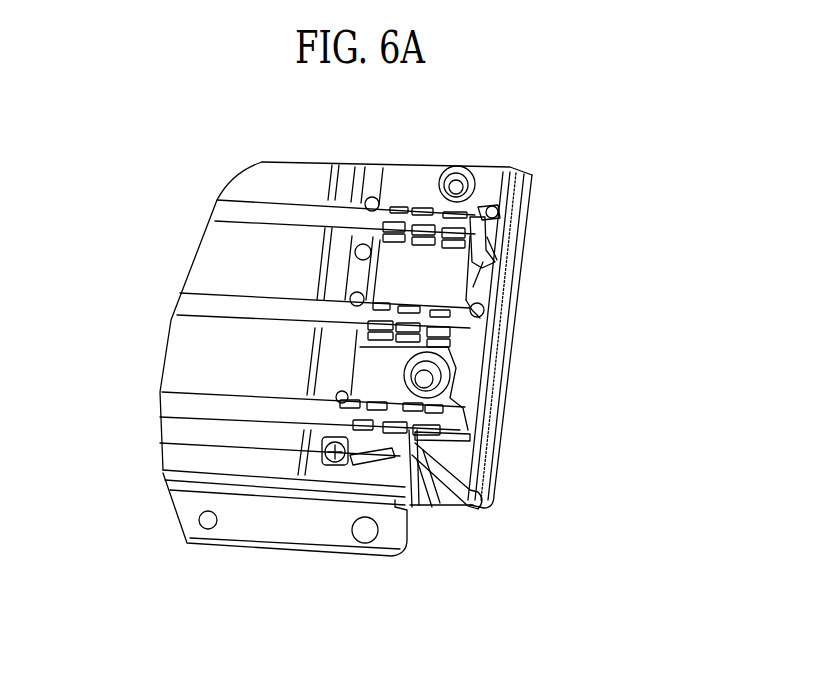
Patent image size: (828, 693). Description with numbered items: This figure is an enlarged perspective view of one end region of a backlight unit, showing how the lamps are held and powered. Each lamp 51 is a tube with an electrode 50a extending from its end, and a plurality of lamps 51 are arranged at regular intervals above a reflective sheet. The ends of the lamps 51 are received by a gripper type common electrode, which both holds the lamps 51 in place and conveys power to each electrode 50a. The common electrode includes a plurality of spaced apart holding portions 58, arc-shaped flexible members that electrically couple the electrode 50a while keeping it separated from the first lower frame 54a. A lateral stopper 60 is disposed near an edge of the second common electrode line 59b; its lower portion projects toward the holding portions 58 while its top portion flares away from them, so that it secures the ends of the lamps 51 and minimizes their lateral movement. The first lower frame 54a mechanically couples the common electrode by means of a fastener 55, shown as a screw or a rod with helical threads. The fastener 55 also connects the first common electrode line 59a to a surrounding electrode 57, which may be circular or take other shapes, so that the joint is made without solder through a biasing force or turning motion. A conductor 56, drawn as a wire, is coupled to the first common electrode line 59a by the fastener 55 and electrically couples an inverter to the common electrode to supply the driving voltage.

The lamp 51 is at (176, 407).
The first common electrode line 59a is at (360, 287).
The second common electrode line 59b is at (482, 268).
The holding portion 58 is at (480, 314).
The lateral stopper 60 is at (490, 320).
The first lower frame 54a is at (487, 395).
The electrode 50a is at (498, 214).
The fastener 55 is at (323, 450).
The conductor 56 is at (420, 460).
The surrounding electrode 57 is at (338, 463).